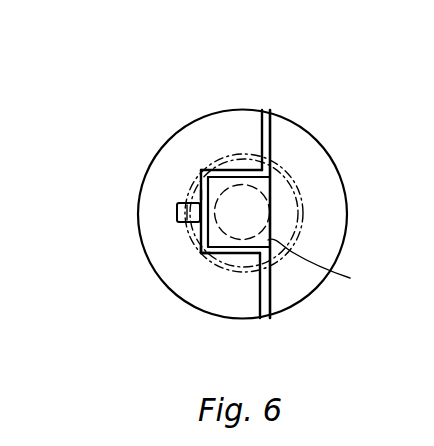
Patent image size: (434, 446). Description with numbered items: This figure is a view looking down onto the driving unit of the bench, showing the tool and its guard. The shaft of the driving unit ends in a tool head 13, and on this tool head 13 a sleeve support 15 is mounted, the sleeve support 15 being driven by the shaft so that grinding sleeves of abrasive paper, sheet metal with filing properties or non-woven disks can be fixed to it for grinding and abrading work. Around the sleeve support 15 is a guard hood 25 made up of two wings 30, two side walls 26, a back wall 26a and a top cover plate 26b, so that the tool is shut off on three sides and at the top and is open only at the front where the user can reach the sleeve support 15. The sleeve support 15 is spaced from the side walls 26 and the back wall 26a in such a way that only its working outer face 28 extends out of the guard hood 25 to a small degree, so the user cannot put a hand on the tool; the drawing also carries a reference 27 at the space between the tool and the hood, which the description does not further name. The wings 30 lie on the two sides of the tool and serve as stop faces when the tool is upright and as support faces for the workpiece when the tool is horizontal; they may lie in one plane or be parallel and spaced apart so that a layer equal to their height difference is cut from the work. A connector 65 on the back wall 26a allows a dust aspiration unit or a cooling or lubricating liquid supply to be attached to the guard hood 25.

The tool head 13 is at (213, 125).
The sleeve support 15 is at (250, 212).
The guard hood 25 is at (201, 196).
The side walls 26 is at (164, 222).
The back wall 26a is at (203, 230).
The top cover plate 26b is at (203, 251).
The annular groove 27 is at (274, 184).
The working outer face 28 is at (320, 266).
The wings 30 is at (266, 119).
The connector 65 is at (177, 206).